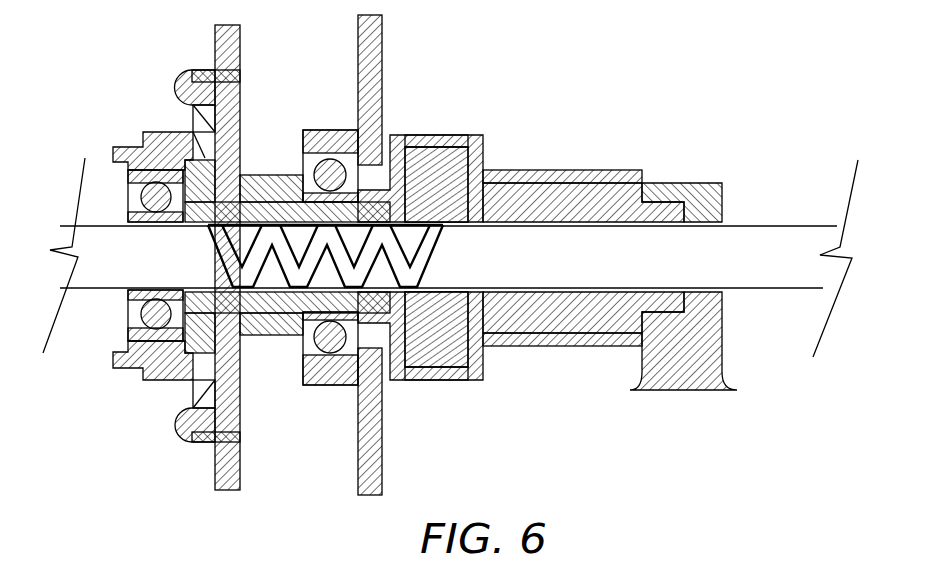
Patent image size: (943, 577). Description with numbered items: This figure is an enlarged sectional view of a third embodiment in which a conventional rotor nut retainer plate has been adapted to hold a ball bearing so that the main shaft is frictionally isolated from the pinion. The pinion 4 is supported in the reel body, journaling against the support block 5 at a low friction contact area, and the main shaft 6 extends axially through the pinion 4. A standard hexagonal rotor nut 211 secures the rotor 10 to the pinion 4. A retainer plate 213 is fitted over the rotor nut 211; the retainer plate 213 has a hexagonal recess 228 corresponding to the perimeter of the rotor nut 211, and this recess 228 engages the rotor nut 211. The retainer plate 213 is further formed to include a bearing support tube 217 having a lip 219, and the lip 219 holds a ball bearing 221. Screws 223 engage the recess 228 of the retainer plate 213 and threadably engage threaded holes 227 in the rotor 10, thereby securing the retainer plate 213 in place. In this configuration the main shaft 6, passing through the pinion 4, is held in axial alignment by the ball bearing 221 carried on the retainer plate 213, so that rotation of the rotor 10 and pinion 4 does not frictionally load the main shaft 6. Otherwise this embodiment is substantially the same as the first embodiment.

The pinion 4 is at (579, 195).
The support block 5 is at (703, 198).
The main shaft 6 is at (806, 278).
The rotor 10 is at (238, 48).
The rotor nut 211 is at (200, 172).
The retainer plate 213 is at (150, 142).
The bearing support tube 217 is at (125, 352).
The lip 219 is at (127, 332).
The ball bearing 221 is at (152, 324).
The screws 223 is at (180, 96).
The threaded holes 227 is at (235, 74).
The recess 228 is at (203, 158).